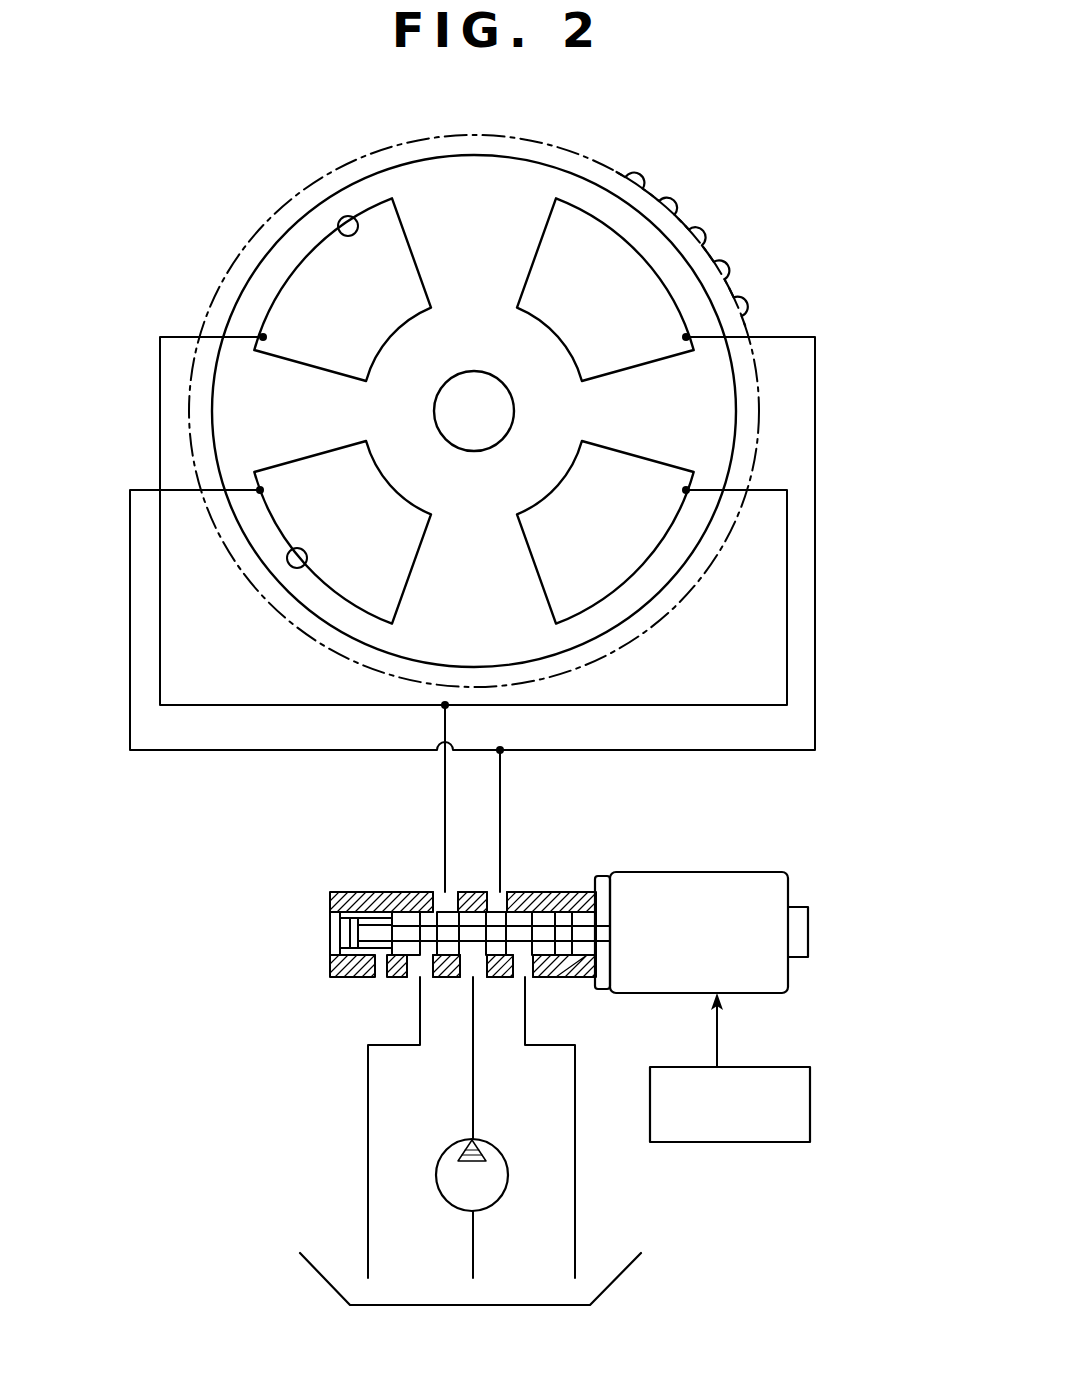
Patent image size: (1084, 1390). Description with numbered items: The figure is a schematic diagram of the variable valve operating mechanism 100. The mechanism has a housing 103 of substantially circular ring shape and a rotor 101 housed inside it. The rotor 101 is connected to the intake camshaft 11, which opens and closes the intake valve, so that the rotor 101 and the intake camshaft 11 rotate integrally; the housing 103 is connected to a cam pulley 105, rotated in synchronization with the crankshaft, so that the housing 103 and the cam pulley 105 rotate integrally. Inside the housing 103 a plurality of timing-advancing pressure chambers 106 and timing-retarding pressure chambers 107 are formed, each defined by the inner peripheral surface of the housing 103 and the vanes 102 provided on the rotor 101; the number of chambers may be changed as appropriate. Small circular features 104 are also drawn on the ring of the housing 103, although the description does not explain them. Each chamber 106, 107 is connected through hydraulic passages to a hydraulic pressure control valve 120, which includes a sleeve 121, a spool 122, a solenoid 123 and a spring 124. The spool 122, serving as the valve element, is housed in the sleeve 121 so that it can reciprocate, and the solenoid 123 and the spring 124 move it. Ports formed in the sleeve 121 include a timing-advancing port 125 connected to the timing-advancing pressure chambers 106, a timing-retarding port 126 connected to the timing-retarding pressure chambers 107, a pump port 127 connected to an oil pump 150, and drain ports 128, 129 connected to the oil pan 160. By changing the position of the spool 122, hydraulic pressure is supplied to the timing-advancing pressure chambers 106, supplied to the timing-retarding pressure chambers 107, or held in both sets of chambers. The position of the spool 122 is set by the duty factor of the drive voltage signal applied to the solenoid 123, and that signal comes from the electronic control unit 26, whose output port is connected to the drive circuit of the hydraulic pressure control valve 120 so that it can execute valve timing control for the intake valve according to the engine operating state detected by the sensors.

The variable valve operating mechanism 100 is at (721, 243).
The rotor 101 is at (540, 488).
The vanes 102 is at (513, 215).
The housing 103 is at (260, 290).
The bolt hole 104 is at (347, 216).
The cam pulley 105 is at (653, 197).
The timing-advancing pressure chambers 106 is at (392, 291).
The timing-retarding pressure chambers 107 is at (645, 329).
The intake camshaft 11 is at (474, 452).
The hydraulic pressure control valve 120 is at (539, 920).
The sleeve 121 is at (362, 892).
The spool 122 is at (398, 933).
The solenoid 123 is at (772, 874).
The spring 124 is at (330, 922).
The timing-advancing port 125 is at (450, 893).
The timing-retarding port 126 is at (540, 875).
The pump port 127 is at (462, 975).
The drain port 128 is at (412, 975).
The drain port 129 is at (527, 975).
The oil pump 150 is at (512, 1132).
The oil pan 160 is at (625, 1270).
The electronic control unit 26 is at (810, 1100).